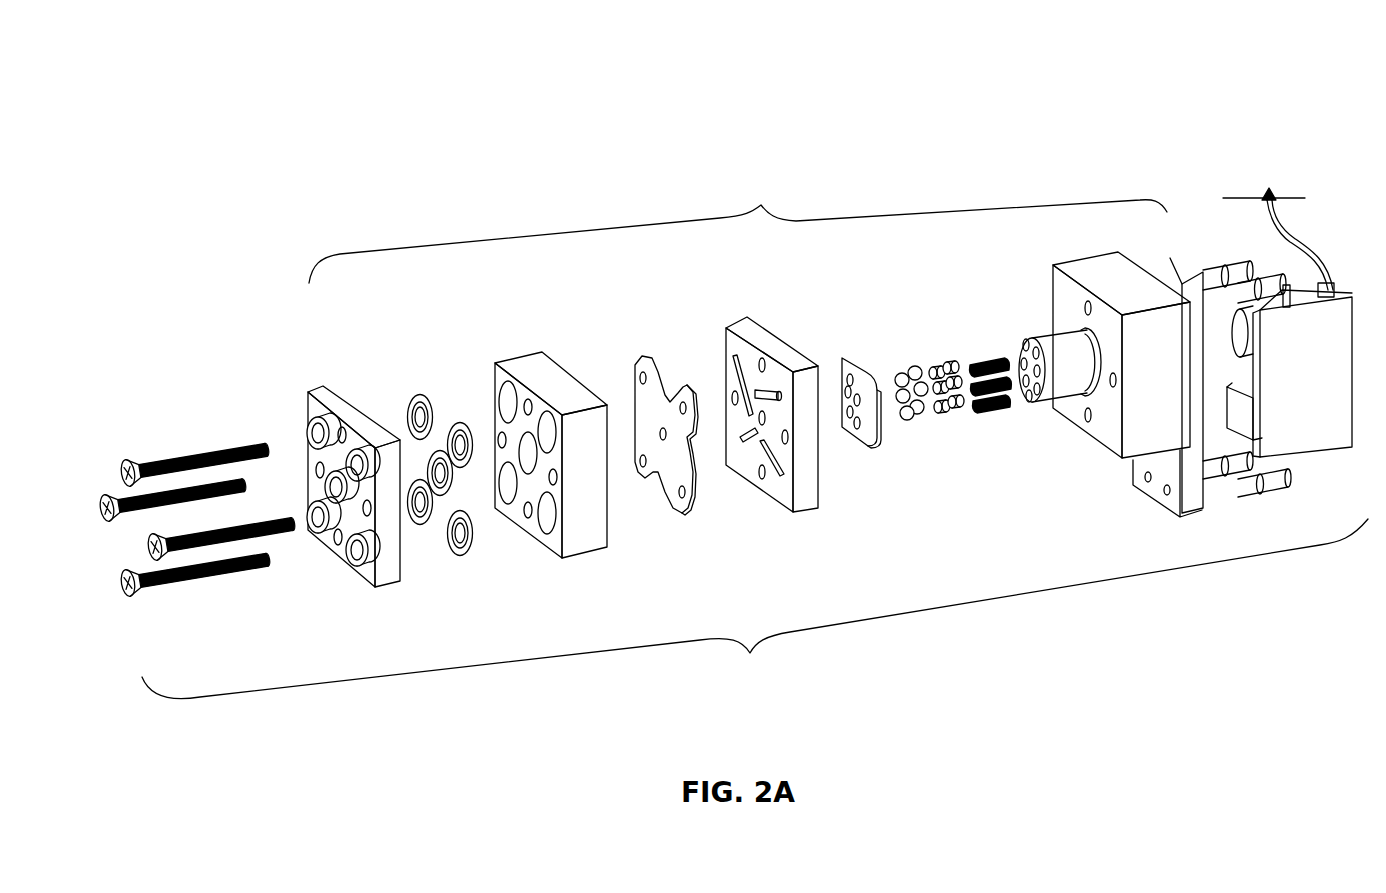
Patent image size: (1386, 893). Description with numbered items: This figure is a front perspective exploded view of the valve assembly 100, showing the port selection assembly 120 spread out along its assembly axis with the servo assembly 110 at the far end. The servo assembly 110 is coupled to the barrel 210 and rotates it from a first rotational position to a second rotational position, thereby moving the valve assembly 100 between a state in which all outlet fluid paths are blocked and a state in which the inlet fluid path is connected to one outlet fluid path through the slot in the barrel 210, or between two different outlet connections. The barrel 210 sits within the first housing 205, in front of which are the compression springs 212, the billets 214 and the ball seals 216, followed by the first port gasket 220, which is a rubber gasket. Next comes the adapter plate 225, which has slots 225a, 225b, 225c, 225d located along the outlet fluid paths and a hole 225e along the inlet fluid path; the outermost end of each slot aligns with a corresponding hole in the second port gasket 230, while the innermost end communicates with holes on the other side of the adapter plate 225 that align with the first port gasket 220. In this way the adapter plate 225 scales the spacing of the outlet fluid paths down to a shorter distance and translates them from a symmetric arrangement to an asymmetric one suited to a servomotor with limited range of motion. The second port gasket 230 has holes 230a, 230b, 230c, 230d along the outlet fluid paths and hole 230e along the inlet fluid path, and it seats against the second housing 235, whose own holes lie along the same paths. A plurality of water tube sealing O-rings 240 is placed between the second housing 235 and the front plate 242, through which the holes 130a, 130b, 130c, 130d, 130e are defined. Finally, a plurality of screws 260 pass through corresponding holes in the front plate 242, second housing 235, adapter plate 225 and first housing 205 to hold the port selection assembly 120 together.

The valve assembly 100 is at (755, 609).
The servo assembly 110 is at (1280, 147).
The port selection assembly 120 is at (738, 229).
The hole 130a is at (310, 431).
The hole 130b is at (316, 519).
The hole 130c is at (358, 460).
The hole 130d is at (355, 551).
The hole 130e is at (330, 487).
The first housing 205 is at (1128, 462).
The barrel 210 is at (1043, 405).
The compression springs 212 is at (991, 416).
The billets 214 is at (944, 426).
The ball seals 216 is at (914, 364).
The first port gasket 220 is at (865, 447).
The adapter plate 225 is at (796, 517).
The slot 225a is at (737, 356).
The slot 225b is at (740, 440).
The slot 225c is at (782, 392).
The slot 225d is at (773, 477).
The hole 225e is at (757, 418).
The second port gasket 230 is at (682, 513).
The hole 230a is at (644, 362).
The hole 230b is at (641, 468).
The hole 230c is at (683, 386).
The hole 230d is at (681, 496).
The hole 230e is at (661, 430).
The second housing 235 is at (553, 362).
The water tube sealing O-rings 240 is at (439, 381).
The front plate 242 is at (385, 588).
The screws 260 is at (201, 430).